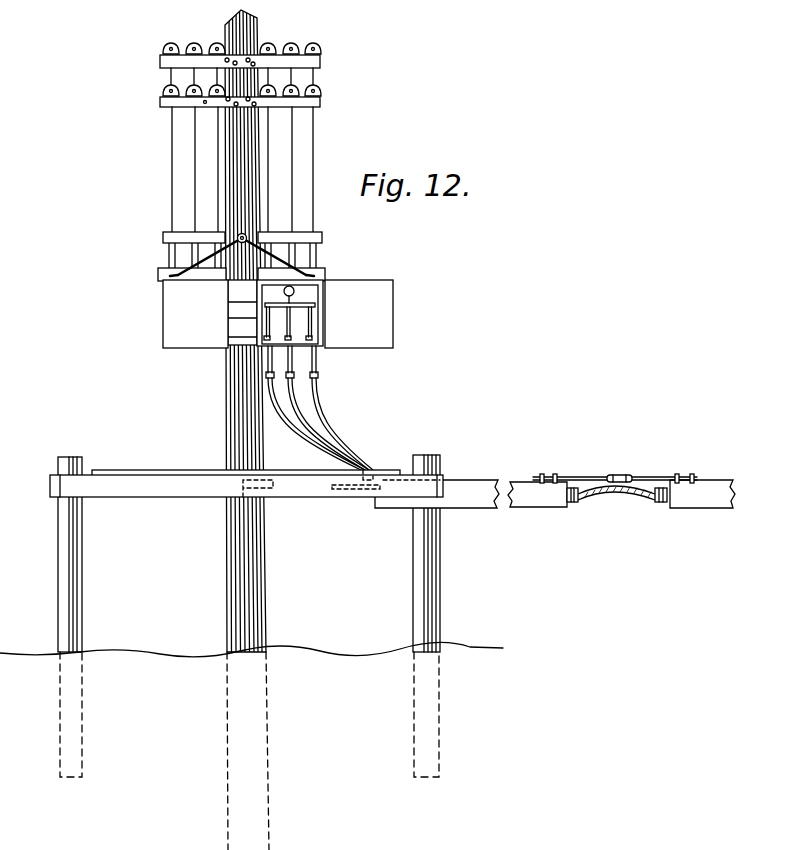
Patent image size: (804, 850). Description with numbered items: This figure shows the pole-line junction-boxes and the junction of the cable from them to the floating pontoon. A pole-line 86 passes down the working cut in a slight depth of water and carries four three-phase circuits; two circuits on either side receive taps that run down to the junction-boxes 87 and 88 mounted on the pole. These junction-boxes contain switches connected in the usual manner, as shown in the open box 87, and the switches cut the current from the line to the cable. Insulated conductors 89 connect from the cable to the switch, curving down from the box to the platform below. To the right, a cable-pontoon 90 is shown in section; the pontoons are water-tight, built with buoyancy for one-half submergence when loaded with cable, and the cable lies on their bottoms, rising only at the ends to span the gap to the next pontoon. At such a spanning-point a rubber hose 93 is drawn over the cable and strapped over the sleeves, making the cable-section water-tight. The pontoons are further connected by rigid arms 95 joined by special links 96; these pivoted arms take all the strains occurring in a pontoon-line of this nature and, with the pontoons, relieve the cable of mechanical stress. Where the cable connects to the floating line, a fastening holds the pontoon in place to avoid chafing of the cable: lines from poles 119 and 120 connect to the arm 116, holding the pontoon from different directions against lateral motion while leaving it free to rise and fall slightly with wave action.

The pole-line 86 is at (238, 182).
The junction-box 87 is at (359, 314).
The junction-box 88 is at (195, 314).
The insulated conductors 89 is at (278, 397).
The cable-pontoon 90 is at (621, 494).
The rubber hose 93 is at (622, 496).
The rigid arms 95 is at (653, 477).
The special links 96 is at (622, 468).
The arm 116 is at (437, 507).
The pole 119 is at (51, 617).
The pole 120 is at (407, 616).